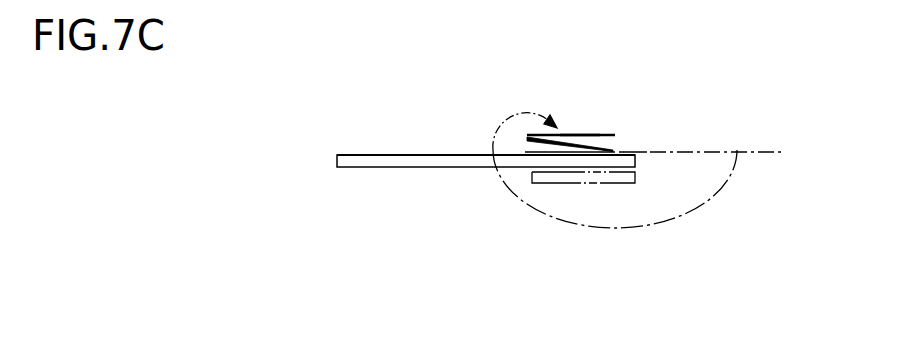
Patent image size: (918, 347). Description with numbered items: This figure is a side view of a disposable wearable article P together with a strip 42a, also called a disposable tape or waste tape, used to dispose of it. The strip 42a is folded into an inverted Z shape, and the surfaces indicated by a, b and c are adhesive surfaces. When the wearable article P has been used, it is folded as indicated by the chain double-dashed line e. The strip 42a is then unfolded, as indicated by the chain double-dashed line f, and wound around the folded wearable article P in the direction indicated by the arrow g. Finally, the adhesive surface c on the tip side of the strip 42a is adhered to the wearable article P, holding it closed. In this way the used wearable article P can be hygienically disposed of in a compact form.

The disposable wearable article P is at (378, 167).
The strip 42a is at (587, 141).
The adhesive surface b is at (577, 140).
The adhesive surface c is at (613, 142).
The chain double-dashed line f is at (726, 152).
The adhesive surface a is at (543, 153).
The chain double-dashed line e is at (549, 184).
The arrow g is at (670, 222).